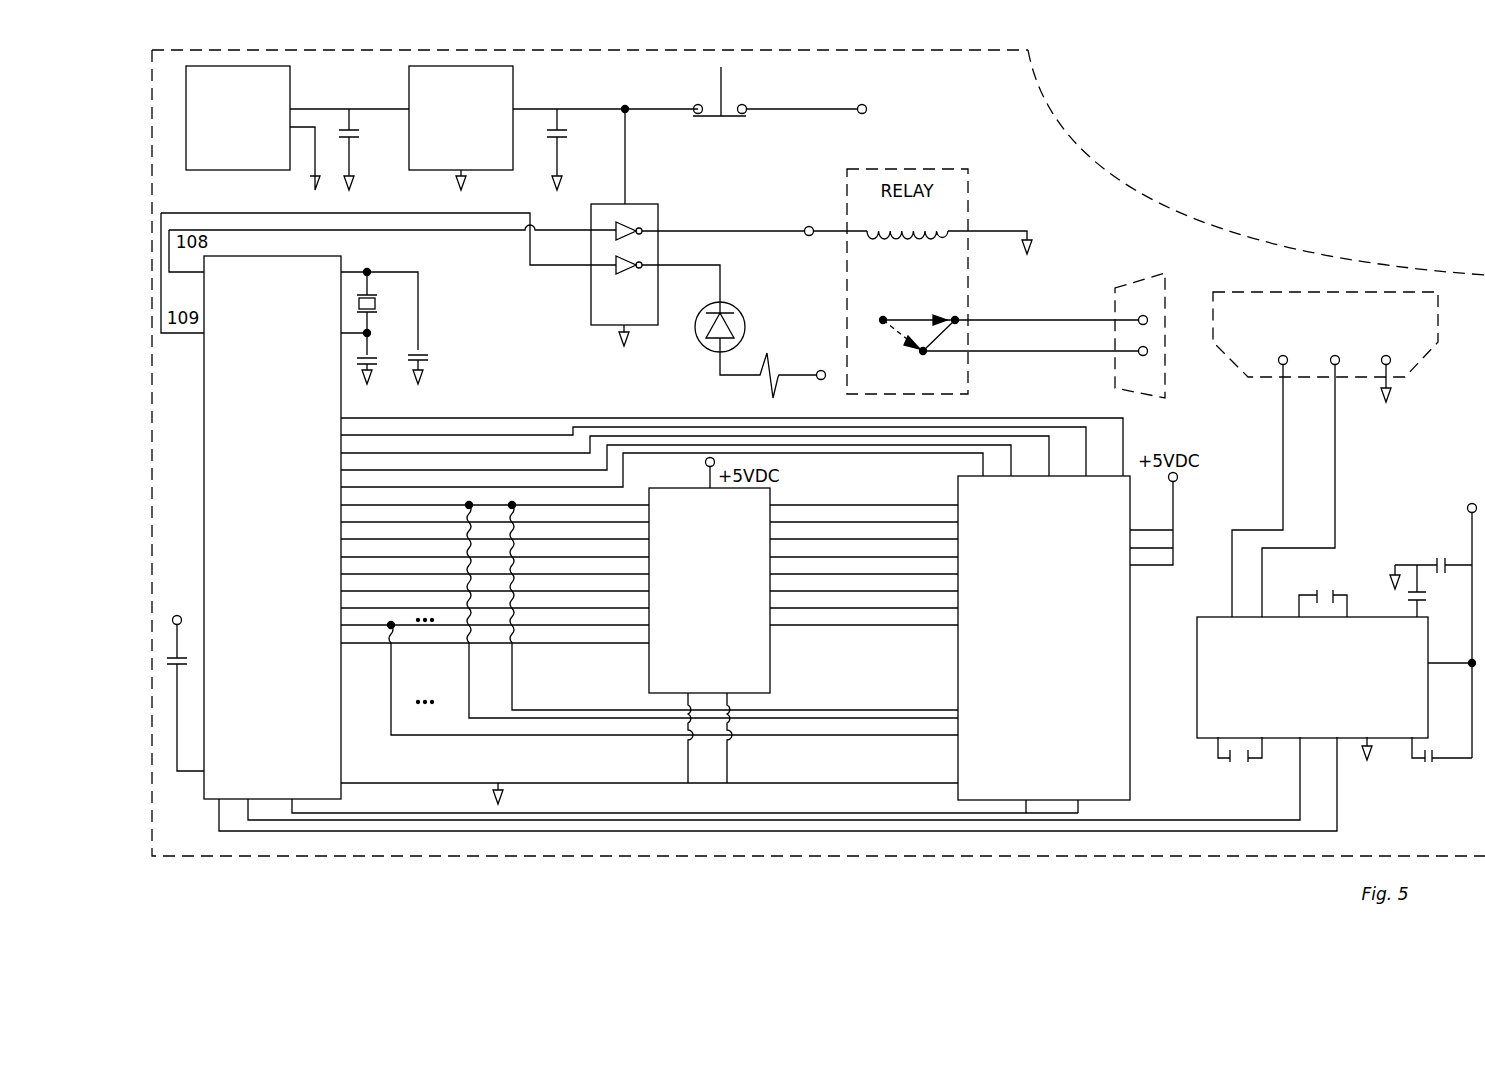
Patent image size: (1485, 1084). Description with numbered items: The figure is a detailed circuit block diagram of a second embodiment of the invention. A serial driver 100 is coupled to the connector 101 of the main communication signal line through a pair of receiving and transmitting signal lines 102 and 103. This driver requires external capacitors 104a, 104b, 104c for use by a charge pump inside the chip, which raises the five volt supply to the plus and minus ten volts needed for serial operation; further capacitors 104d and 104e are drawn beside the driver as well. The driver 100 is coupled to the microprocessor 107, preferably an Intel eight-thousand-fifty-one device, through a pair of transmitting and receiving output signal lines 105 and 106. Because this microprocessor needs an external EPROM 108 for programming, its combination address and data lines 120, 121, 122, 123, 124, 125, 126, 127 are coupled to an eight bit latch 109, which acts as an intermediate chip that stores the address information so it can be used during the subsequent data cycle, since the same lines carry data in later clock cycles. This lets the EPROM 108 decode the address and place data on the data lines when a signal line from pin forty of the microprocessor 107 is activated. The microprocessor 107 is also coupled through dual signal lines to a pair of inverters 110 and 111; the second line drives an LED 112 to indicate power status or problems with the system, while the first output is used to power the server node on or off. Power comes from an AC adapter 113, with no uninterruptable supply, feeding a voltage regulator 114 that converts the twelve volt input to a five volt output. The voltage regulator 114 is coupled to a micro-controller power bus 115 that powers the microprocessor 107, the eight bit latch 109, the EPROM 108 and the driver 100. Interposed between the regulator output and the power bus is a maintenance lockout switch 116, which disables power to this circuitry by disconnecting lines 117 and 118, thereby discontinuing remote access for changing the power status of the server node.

The RS 232 driver 100 is at (1296, 702).
The connector 101 is at (1413, 372).
The receiving signal line 102 is at (1283, 478).
The transmitting signal line 103 is at (1335, 478).
The external capacitor 104a is at (1323, 592).
The external capacitor 104b is at (1240, 764).
The external capacitor 104c is at (1440, 764).
The capacitor 104d is at (1426, 597).
The capacitor 104e is at (1431, 563).
The transmitting output signal line 105 is at (1147, 818).
The receiving output signal line 106 is at (1337, 803).
The microprocessor 107 is at (256, 583).
The EPROM 108 is at (1027, 677).
The eight bit latch 109 is at (693, 655).
The inverter 110 is at (623, 230).
The inverter 111 is at (615, 262).
The LED 112 is at (700, 345).
The AC adapter 113 is at (222, 130).
The voltage regulator 114 is at (445, 130).
The micro-controller power bus 115 is at (868, 105).
The maintenance lockout switch 116 is at (723, 118).
The line 117 is at (652, 108).
The line 118 is at (773, 110).
The combination address and data line 120 is at (495, 497).
The combination address and data line 121 is at (495, 514).
The combination address and data line 122 is at (495, 531).
The combination address and data line 123 is at (495, 549).
The combination address and data line 124 is at (495, 566).
The combination address and data line 125 is at (495, 583).
The combination address and data line 126 is at (495, 600).
The combination address and data line 127 is at (495, 617).